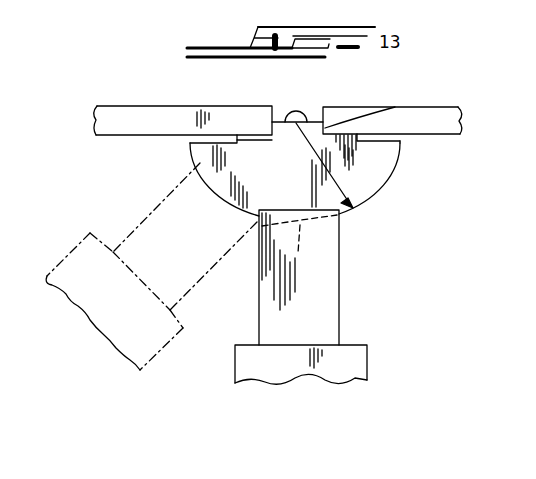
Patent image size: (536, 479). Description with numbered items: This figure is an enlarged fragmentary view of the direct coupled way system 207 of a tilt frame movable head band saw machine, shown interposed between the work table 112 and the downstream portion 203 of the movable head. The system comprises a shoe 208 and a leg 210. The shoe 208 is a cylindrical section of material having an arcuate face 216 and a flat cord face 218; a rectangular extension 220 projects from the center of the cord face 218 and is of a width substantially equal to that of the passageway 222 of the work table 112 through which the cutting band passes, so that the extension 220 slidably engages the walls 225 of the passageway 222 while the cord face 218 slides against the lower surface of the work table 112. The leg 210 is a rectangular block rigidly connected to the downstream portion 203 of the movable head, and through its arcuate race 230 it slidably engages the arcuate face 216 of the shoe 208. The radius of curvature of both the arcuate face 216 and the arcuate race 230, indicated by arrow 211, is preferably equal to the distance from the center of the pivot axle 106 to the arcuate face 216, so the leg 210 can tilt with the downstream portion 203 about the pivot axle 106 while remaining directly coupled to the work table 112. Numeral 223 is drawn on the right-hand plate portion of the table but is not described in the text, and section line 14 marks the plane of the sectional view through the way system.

The section line 14 is at (265, 82).
The work table 112 is at (182, 116).
The rectangular extension 220 is at (274, 106).
The passageway 222 is at (312, 106).
The pivot axle 106 is at (302, 113).
The right support plate 223 is at (456, 134).
The walls of passageway 225 is at (381, 106).
The direct coupled way system 207 is at (326, 234).
The shoe 208 is at (382, 160).
The arcuate face 216 is at (382, 187).
The cord face 218 is at (344, 176).
The radius arrow 211 is at (311, 150).
The leg 210 is at (323, 307).
The arcuate race 230 is at (299, 243).
The downstream portion 203 is at (353, 363).